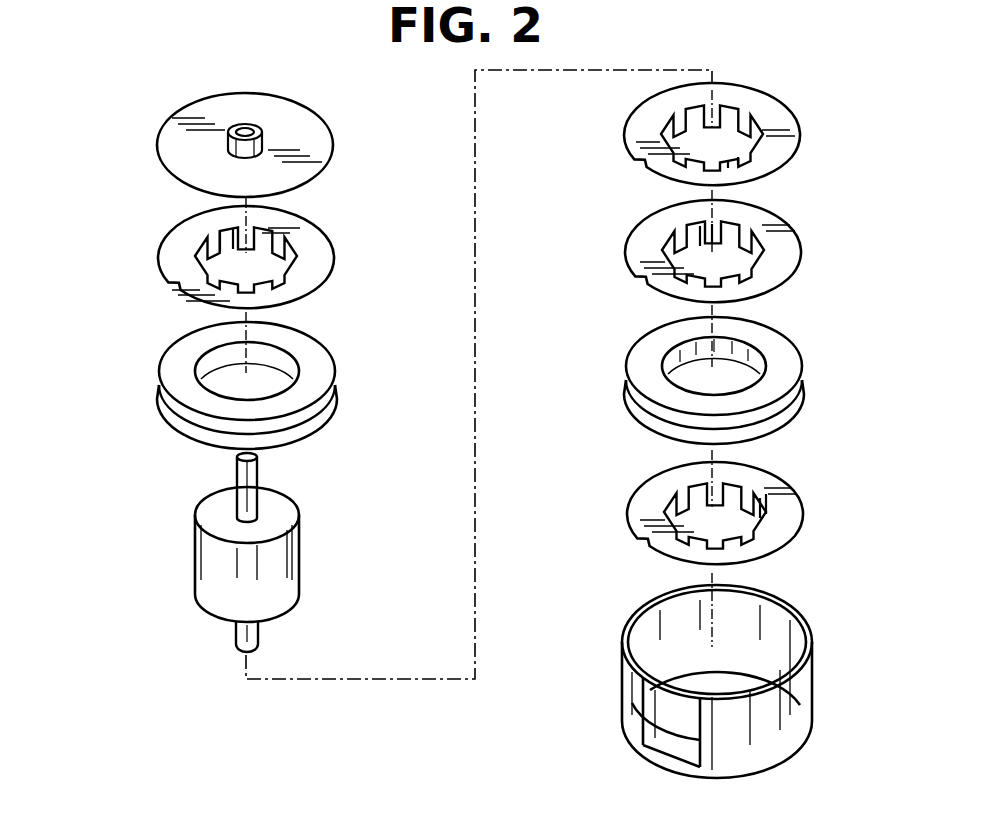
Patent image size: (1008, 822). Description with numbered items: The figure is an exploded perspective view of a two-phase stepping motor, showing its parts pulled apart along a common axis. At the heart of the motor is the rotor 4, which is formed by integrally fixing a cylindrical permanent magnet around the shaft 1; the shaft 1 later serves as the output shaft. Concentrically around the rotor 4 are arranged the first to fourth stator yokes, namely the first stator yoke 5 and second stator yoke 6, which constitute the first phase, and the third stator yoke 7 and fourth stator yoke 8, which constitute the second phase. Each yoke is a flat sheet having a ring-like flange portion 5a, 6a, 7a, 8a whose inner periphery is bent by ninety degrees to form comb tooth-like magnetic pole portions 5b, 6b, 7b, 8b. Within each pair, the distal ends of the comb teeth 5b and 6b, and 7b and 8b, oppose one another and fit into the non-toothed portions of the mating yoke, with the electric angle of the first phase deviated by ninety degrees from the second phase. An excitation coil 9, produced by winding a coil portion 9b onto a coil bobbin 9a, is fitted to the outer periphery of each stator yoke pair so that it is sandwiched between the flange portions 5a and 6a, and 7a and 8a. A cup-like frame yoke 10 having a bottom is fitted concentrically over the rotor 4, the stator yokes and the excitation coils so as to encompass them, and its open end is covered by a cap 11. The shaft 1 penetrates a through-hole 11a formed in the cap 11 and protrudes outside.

The shaft 1 is at (254, 476).
The rotor 4 is at (302, 553).
The first stator yoke 5 is at (334, 244).
The flange portion 5a is at (178, 253).
The comb tooth-like magnetic pole portion 5b is at (218, 238).
The second stator yoke 6 is at (794, 105).
The flange portion 6a is at (642, 124).
The comb tooth-like magnetic pole portion 6b is at (742, 154).
The third stator yoke 7 is at (788, 213).
The flange portion 7a is at (643, 244).
The comb tooth-like magnetic pole portion 7b is at (722, 233).
The fourth stator yoke 8 is at (783, 473).
The flange portion 8a is at (648, 498).
The comb tooth-like magnetic pole portion 8b is at (762, 505).
The excitation coil 9 is at (326, 342).
The coil bobbin 9a is at (315, 432).
The coil portion 9b is at (316, 407).
The frame yoke 10 is at (811, 690).
The cap 11 is at (334, 150).
The through-hole 11a is at (250, 124).